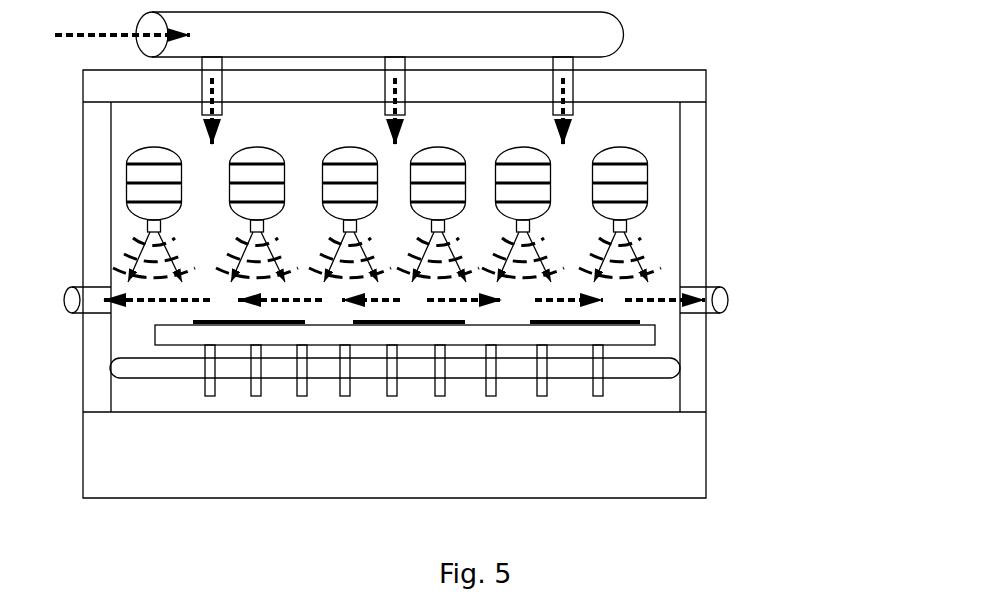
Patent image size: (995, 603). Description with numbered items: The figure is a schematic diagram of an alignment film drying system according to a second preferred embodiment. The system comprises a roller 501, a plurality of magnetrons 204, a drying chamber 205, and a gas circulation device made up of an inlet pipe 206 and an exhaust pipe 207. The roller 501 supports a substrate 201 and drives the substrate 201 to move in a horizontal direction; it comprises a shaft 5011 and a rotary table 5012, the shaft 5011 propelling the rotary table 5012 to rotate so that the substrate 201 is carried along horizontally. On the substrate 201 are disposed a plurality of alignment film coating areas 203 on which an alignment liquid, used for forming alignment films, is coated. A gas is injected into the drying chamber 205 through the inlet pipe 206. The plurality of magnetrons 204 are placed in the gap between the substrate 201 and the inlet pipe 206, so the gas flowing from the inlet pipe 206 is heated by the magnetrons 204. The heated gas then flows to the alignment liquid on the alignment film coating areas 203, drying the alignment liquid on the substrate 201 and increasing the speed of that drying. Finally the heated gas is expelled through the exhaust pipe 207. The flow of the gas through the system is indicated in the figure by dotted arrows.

The substrate 201 is at (630, 338).
The alignment film coating areas 203 is at (613, 321).
The magnetrons 204 is at (635, 174).
The drying chamber 205 is at (693, 207).
The inlet pipe 206 is at (563, 71).
The exhaust pipe 207 is at (708, 287).
The roller 501 is at (478, 397).
The shaft 5011 is at (643, 370).
The rotary table 5012 is at (603, 383).